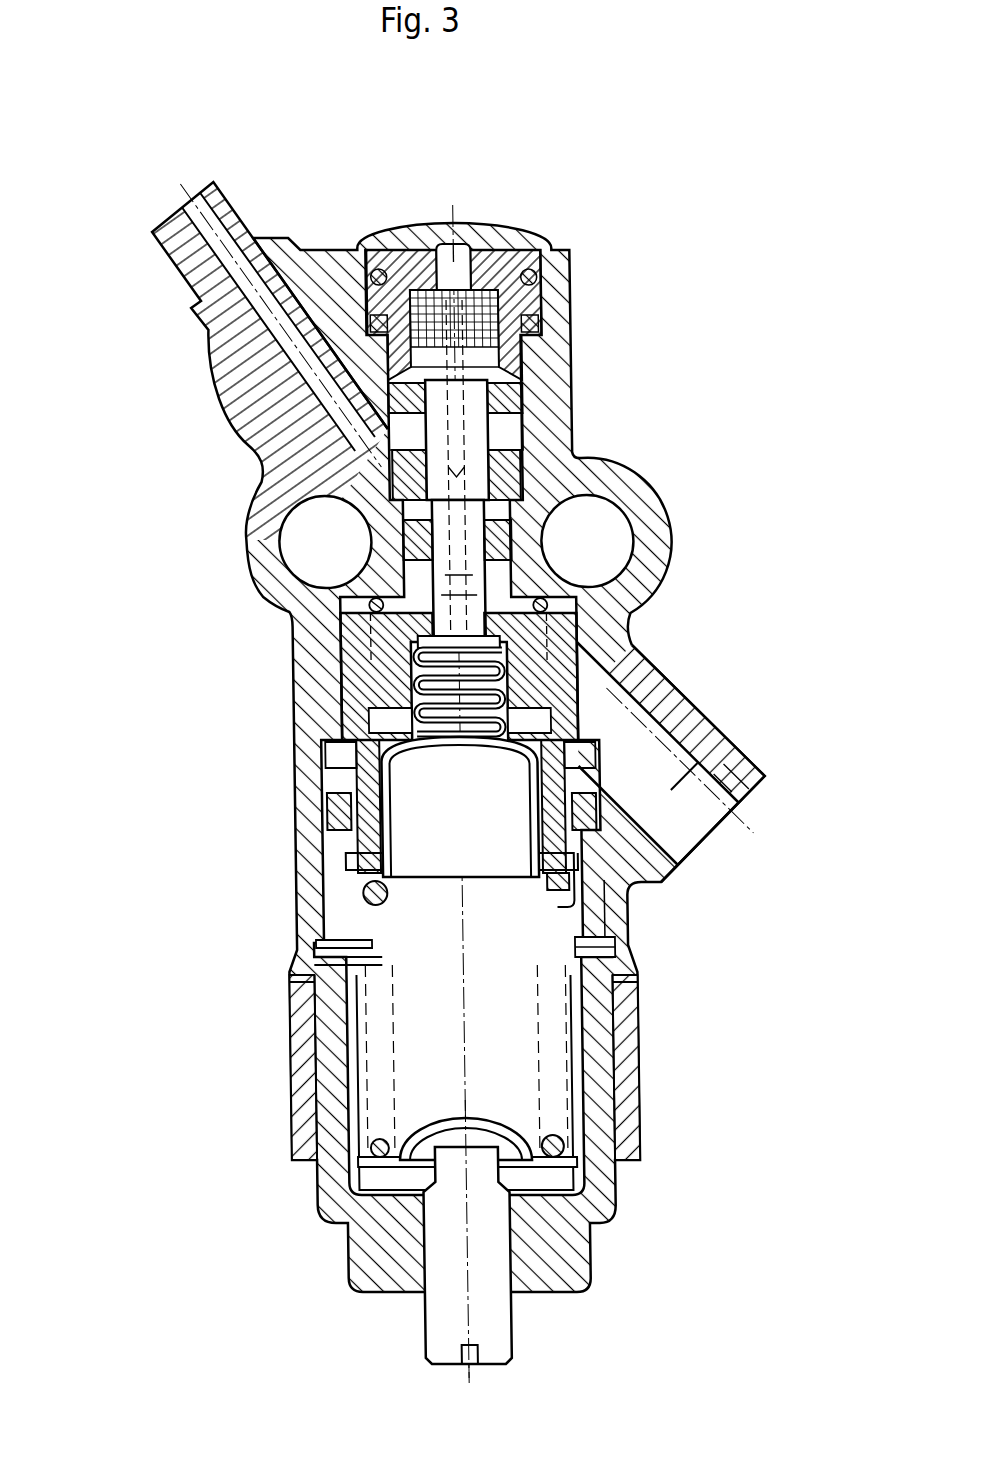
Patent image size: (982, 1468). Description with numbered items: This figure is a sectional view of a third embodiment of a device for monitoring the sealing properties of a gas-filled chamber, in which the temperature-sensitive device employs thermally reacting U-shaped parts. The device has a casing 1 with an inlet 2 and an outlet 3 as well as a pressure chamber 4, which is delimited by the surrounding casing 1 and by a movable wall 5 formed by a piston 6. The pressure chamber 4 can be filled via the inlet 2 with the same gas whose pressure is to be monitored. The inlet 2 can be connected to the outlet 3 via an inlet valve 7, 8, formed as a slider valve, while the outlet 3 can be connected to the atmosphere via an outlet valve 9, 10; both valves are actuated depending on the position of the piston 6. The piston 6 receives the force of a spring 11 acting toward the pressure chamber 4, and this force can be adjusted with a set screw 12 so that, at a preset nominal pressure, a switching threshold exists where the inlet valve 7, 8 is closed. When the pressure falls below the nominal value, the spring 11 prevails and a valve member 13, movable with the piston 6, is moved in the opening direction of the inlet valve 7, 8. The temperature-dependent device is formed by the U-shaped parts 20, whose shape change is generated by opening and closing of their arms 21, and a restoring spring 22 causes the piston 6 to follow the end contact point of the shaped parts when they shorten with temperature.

The casing 1 is at (305, 1090).
The inlet 2 is at (717, 808).
The outlet 3 is at (183, 213).
The pressure chamber 4 is at (338, 642).
The movable wall 5 is at (298, 517).
The piston 6 is at (594, 904).
The inlet valve 7 is at (495, 462).
The inlet valve 8 is at (470, 494).
The outlet valve 9 is at (435, 406).
The outlet valve 10 is at (487, 359).
The spring 11 is at (372, 973).
The set screw 12 is at (445, 1338).
The valve member 13 is at (490, 563).
The U-shaped parts 20 is at (458, 706).
The arms 21 is at (420, 690).
The restoring spring 22 is at (376, 680).